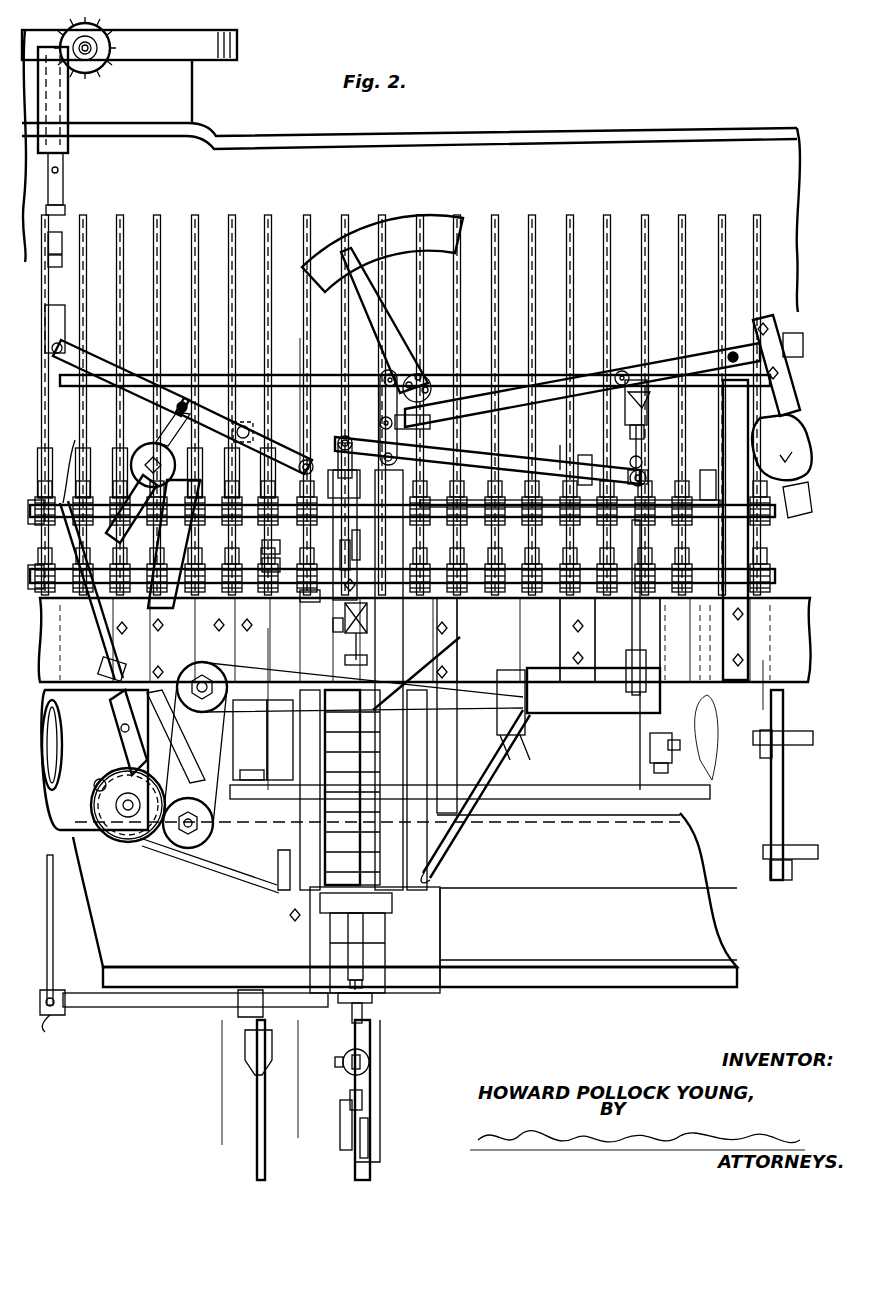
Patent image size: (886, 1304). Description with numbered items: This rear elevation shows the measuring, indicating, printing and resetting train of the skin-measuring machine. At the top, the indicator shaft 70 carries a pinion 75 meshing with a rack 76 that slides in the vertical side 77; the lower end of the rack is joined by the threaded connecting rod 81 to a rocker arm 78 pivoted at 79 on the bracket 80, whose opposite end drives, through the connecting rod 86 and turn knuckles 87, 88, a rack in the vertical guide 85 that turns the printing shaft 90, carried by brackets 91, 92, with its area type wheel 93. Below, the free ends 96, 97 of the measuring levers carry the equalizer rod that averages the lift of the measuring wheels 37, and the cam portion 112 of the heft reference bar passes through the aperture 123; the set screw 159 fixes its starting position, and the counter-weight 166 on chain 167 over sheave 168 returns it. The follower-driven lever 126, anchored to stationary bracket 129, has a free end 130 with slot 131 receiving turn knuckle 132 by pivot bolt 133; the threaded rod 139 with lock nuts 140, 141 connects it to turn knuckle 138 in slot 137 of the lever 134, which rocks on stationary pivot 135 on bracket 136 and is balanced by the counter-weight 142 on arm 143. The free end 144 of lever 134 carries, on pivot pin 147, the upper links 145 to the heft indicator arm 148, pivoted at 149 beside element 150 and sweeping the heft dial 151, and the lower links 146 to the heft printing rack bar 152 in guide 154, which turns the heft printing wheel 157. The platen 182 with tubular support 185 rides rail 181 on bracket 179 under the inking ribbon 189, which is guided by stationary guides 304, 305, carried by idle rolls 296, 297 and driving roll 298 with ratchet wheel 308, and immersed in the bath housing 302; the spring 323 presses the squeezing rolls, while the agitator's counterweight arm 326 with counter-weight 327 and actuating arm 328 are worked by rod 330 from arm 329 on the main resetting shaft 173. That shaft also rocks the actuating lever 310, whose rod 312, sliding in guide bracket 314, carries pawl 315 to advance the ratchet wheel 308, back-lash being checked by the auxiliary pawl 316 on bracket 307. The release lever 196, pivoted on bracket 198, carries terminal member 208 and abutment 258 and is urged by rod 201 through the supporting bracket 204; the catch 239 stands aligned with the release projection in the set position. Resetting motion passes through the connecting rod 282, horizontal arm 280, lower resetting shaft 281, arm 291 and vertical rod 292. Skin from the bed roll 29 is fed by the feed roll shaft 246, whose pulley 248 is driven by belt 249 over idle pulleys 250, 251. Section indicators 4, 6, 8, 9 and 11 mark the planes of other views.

The gear 76 is at (108, 34).
The arm 75 is at (100, 52).
The shaft 70 is at (92, 56).
The slide bar 77 is at (55, 108).
The slide block 81 is at (60, 240).
The indicator scale 151 is at (370, 226).
The pointer arm 148 is at (372, 303).
The section line 4- 4 is at (296, 340).
The pivot 150 is at (388, 372).
The link 145 is at (380, 380).
The pivot plate 149 is at (422, 376).
The lever 134 is at (582, 385).
The lever end 144 is at (425, 424).
The pivot 147 is at (380, 423).
The section line 9- 9 is at (376, 403).
The section line 8- 8 is at (295, 411).
The pivot 137 is at (622, 370).
The bracket 138 is at (645, 378).
The pawl 141 is at (660, 385).
The lever 135 is at (773, 340).
The cam 143 is at (782, 447).
The cam notch 142 is at (789, 467).
The lever 78 is at (112, 384).
The lever 79 is at (172, 410).
The link 129 is at (228, 433).
The slide 123 is at (245, 422).
The pivot 126 is at (340, 443).
The block 146 is at (349, 482).
The bar 152 is at (487, 462).
The pin 130 is at (560, 446).
The bracket 131 is at (585, 455).
The block 139 is at (645, 412).
The pin 140 is at (642, 428).
The block 132 is at (648, 440).
The pivot 133 is at (648, 470).
The block 173 is at (721, 485).
The plate 136 is at (748, 536).
The rod 310 is at (74, 464).
The lever 80 is at (148, 493).
The plate 87 is at (348, 486).
The block 86 is at (262, 546).
The block 96 is at (262, 563).
The pin 112 is at (361, 552).
The stud 159 is at (356, 584).
The rail 97 is at (447, 572).
The plate 329 is at (578, 594).
The rod 330 is at (634, 615).
The plate 37 is at (672, 600).
The block 88 is at (320, 597).
The coupling 168 is at (360, 614).
The block 154 is at (369, 623).
The pin 167 is at (375, 649).
The rod 307 is at (108, 640).
The clamp 314 is at (100, 660).
The pulley 296 is at (196, 664).
The section line 6- 6 is at (295, 629).
The link 166 is at (450, 662).
The belt 189 is at (462, 690).
The section line 11- 11 is at (782, 665).
The block 328 is at (626, 690).
The housing 323 is at (523, 712).
The plate 85 is at (300, 714).
The link 312 is at (112, 735).
The pin 315 is at (108, 770).
The bar 91 is at (222, 728).
The scale 93 is at (320, 745).
The scale 157 is at (382, 758).
The bracket 92 is at (478, 736).
The block 302 is at (648, 745).
The screw 326 is at (648, 758).
The nut 327 is at (654, 770).
The shaft 250 is at (775, 700).
The pin 248 is at (775, 748).
The block 90 is at (262, 778).
The loop 316 is at (100, 765).
The drum 308 is at (92, 800).
The frame 246 is at (520, 825).
The frame edge 29 is at (684, 823).
The pin 249 is at (770, 825).
The gear 251 is at (790, 868).
The bracket 304 is at (283, 858).
The pulley rim 298 is at (148, 850).
The strap 305 is at (430, 862).
The pulley 297 is at (188, 850).
The cap 182 is at (393, 902).
The plunger 185 is at (364, 936).
The rod 292 is at (55, 916).
The pin 181 is at (365, 987).
The housing 179 is at (380, 1000).
The stem 198 is at (365, 1025).
The clamp 291 is at (62, 1016).
The bar 281 is at (200, 1006).
The knob 258 is at (372, 1058).
The clamp 280 is at (246, 1035).
The rod 196 is at (372, 1080).
The block 201 is at (372, 1100).
The rod 282 is at (257, 1098).
The plate 208 is at (372, 1125).
The bar 239 is at (372, 1150).
The guide 204 is at (385, 1160).